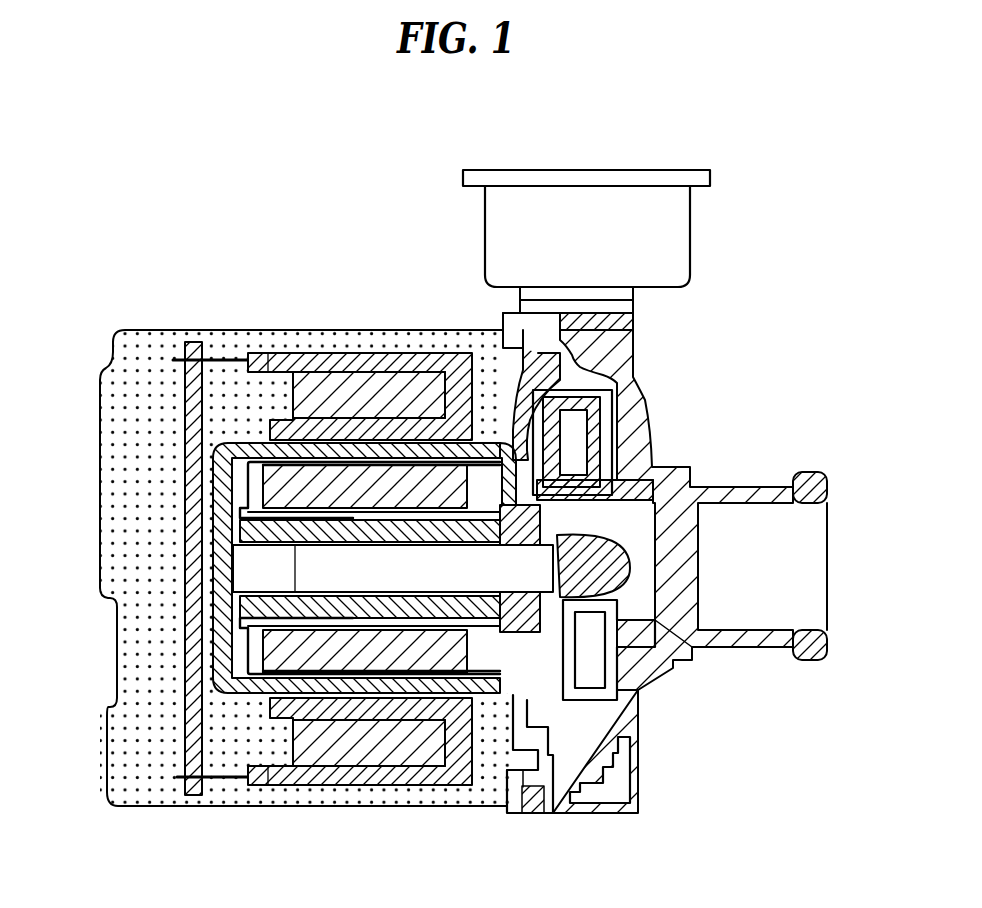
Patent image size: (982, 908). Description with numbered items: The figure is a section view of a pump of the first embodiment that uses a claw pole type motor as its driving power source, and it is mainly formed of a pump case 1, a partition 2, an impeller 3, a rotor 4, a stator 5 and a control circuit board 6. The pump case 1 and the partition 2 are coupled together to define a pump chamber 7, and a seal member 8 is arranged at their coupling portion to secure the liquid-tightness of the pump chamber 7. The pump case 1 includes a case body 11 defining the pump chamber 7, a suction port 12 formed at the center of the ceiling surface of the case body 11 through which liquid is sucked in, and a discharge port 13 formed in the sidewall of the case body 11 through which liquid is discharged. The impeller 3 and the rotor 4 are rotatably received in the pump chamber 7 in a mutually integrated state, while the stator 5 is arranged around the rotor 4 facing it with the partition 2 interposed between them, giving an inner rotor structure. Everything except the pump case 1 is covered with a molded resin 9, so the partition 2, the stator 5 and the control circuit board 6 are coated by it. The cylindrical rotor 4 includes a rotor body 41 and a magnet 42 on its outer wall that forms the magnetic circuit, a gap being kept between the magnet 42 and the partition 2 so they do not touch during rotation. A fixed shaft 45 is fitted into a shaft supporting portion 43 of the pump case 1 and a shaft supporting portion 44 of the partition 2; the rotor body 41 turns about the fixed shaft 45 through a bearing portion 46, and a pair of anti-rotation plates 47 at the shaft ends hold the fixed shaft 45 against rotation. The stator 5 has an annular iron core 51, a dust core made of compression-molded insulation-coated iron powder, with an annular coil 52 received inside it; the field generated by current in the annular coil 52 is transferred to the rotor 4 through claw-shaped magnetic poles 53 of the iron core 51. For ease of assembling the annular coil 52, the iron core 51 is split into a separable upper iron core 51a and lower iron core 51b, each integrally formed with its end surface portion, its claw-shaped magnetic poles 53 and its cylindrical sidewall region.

The pump case 1 is at (650, 386).
The partition 2 is at (373, 583).
The impeller 3 is at (620, 425).
The rotor 4 is at (373, 583).
The stator 5 is at (268, 566).
The control circuit board 6 is at (190, 563).
The pump chamber 7 is at (506, 735).
The seal member 8 is at (530, 813).
The molded resin 9 is at (137, 365).
The case body 11 is at (672, 655).
The suction port 12 is at (805, 578).
The discharge port 13 is at (585, 172).
The rotor body 41 is at (245, 507).
The magnet 42 is at (228, 485).
The shaft supporting portion 43 is at (632, 695).
The shaft supporting portion 44 is at (320, 540).
The fixed shaft 45 is at (330, 574).
The bearing portion 46 is at (403, 612).
The anti-rotation plates 47 is at (362, 535).
The iron core 51 is at (388, 352).
The upper iron core 51a is at (458, 365).
The lower iron core 51b is at (270, 352).
The annular coil 52 is at (420, 380).
The claw-shaped magnetic poles 53 is at (331, 420).